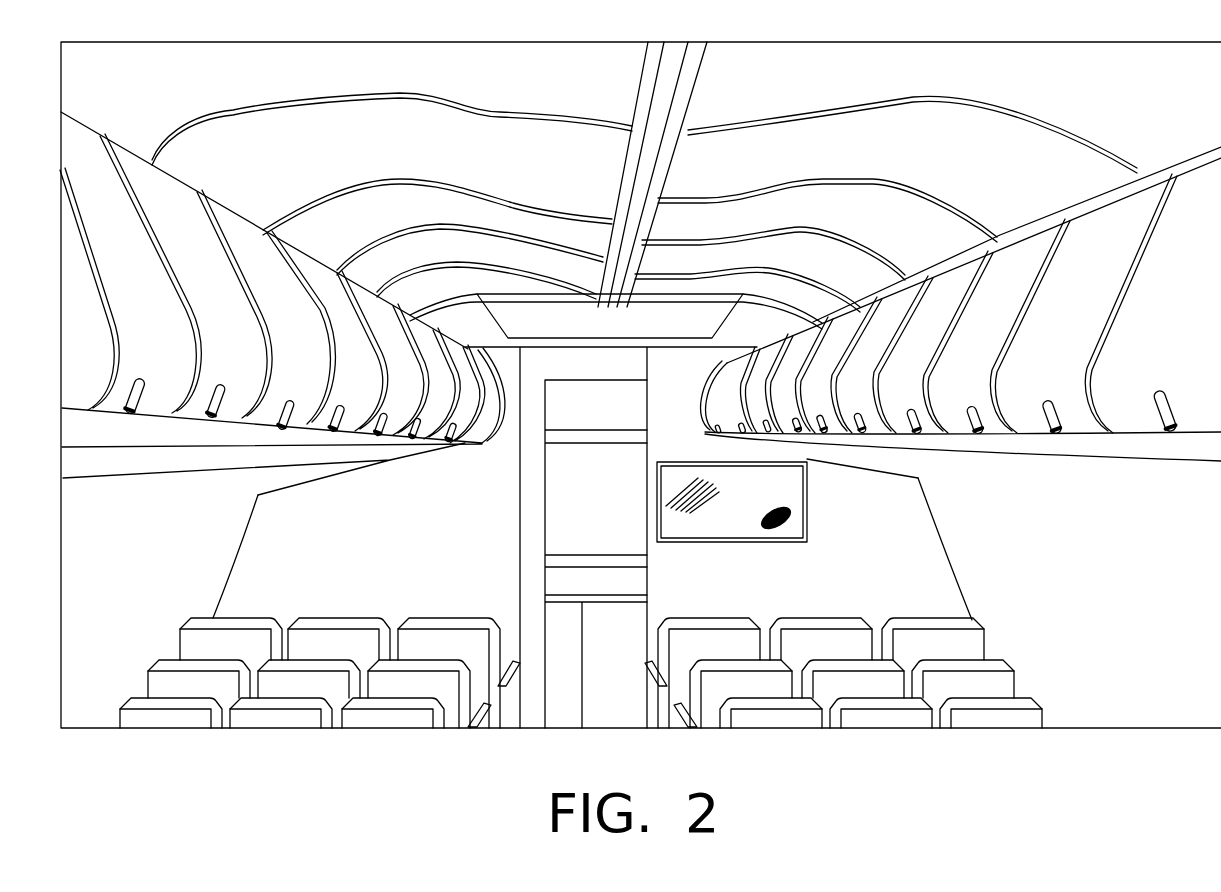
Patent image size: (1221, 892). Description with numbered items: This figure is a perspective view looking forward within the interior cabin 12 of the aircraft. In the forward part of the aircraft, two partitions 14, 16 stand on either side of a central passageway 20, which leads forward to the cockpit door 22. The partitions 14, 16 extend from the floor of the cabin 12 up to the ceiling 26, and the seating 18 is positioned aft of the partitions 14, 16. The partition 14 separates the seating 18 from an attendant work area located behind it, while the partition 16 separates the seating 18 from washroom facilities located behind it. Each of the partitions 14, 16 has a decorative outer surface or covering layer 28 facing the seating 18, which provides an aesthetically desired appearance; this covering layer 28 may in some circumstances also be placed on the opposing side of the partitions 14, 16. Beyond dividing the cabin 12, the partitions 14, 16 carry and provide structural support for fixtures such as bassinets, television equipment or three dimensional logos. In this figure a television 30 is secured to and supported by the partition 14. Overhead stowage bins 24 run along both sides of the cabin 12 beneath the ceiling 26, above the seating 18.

The interior cabin 12 is at (1001, 546).
The partition 14 is at (754, 579).
The partition 16 is at (418, 556).
The seating 18 is at (323, 683).
The passageway 20 is at (614, 587).
The cockpit door 22 is at (590, 460).
The overhead stowage bins 24 is at (640, 286).
The ceiling 26 is at (590, 179).
The covering layer 28 is at (480, 506).
The television 30 is at (732, 520).